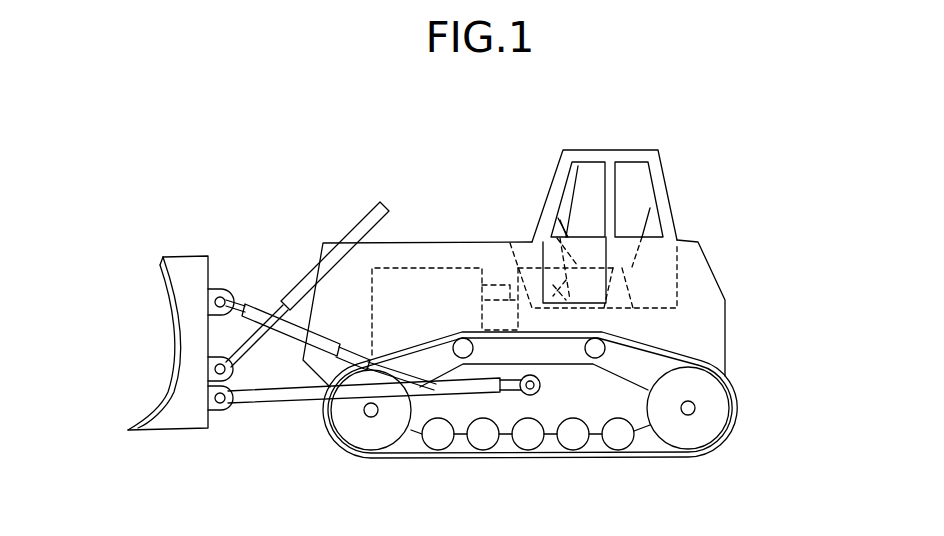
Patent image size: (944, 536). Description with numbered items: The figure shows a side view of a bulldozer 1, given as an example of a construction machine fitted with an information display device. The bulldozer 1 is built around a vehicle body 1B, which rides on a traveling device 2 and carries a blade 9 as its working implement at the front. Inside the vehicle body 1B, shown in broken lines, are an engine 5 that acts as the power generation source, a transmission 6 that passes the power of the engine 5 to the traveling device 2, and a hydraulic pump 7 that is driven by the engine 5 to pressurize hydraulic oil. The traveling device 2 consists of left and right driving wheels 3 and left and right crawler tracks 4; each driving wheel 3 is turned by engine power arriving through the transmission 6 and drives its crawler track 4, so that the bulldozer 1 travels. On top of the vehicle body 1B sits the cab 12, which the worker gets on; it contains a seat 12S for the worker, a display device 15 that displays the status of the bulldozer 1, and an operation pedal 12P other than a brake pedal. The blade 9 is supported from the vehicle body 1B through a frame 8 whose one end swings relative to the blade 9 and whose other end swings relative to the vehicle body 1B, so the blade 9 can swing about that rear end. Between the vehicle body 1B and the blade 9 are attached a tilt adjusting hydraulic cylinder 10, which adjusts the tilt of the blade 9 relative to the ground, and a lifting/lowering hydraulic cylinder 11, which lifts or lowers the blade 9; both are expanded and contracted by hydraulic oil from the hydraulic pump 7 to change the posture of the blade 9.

The bulldozer 1 is at (240, 152).
The vehicle body 1B is at (695, 272).
The traveling device 2 is at (775, 425).
The driving wheel 3 is at (712, 422).
The crawler track 4 is at (683, 455).
The engine 5 is at (428, 283).
The transmission 6 is at (500, 310).
The hydraulic pump 7 is at (492, 290).
The frame 8 is at (272, 398).
The blade 9 is at (188, 269).
The tilt adjusting hydraulic cylinder 10 is at (367, 366).
The lifting/lowering hydraulic cylinder 11 is at (362, 230).
The cab 12 is at (642, 188).
The operation pedal 12P is at (575, 266).
The seat 12S is at (641, 221).
The display device 15 is at (562, 222).